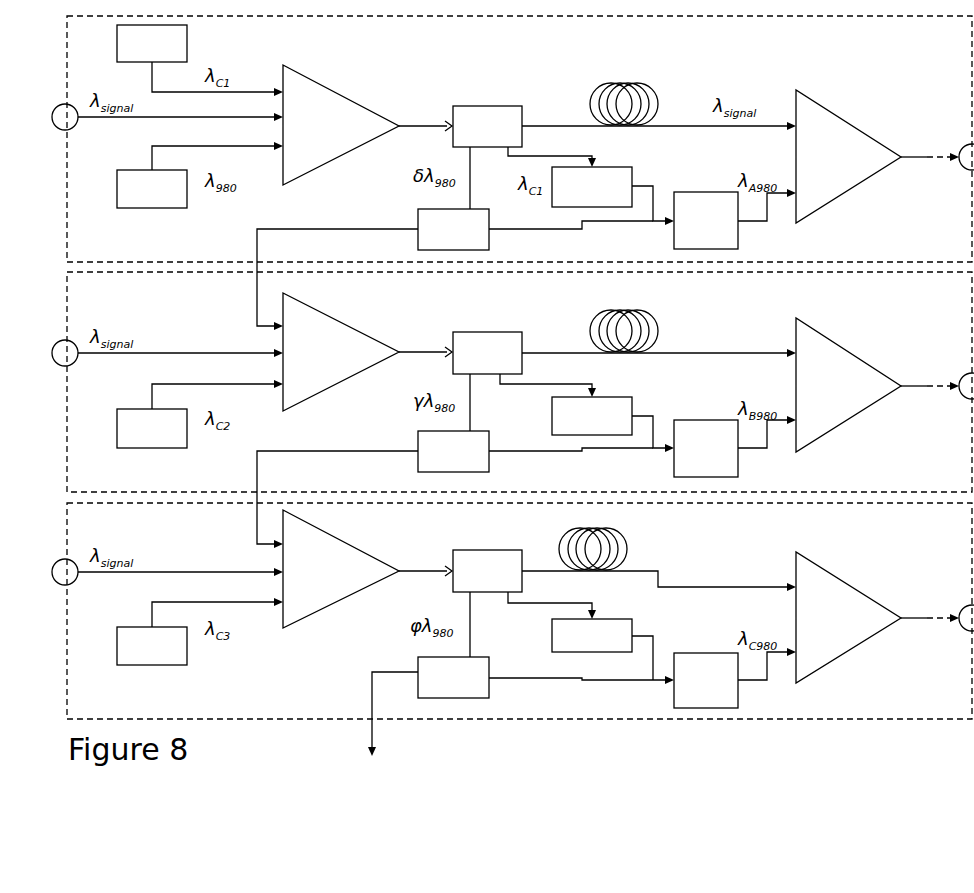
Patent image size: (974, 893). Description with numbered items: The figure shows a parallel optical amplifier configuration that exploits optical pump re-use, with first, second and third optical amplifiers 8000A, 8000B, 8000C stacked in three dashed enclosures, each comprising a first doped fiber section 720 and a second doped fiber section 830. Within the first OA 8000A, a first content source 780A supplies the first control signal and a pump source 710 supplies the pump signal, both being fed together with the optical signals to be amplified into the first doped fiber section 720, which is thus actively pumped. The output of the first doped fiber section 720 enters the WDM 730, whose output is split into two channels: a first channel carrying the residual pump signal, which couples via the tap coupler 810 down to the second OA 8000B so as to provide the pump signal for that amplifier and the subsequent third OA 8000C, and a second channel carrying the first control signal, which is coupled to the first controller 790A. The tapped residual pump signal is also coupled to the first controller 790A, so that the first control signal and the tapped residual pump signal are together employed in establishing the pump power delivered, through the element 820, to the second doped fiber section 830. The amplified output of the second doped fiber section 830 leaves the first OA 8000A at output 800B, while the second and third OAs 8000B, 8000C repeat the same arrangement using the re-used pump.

The pump source 710 is at (200, 175).
The first doped fiber section 720 is at (341, 125).
The WDM 730 is at (487, 126).
The first content source 780A is at (200, 60).
The first controller 790A is at (613, 196).
The tap coupler 810 is at (455, 269).
The pump adjustment unit 820 is at (735, 219).
The second doped fiber section 830 is at (848, 156).
The output port 800B is at (944, 143).
The first OA 8000A is at (519, 139).
The second OA 8000B is at (519, 382).
The third OA 8000C is at (519, 611).